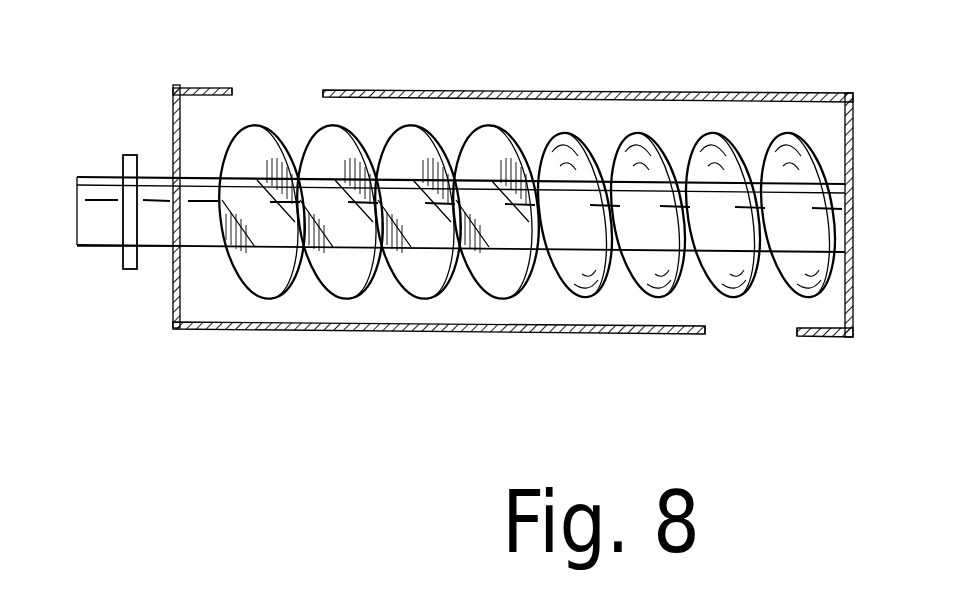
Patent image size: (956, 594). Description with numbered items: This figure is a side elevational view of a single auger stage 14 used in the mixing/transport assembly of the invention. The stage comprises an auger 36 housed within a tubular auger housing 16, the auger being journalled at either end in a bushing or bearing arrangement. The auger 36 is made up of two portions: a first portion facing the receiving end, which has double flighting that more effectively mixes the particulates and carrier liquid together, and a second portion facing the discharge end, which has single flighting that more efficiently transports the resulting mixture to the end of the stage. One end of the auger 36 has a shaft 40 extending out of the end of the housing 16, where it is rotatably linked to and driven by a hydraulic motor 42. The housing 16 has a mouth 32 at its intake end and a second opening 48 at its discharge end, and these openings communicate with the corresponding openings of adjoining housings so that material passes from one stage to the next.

The auger stage 14 is at (396, 350).
The tubular auger housing 16 is at (515, 90).
The mouth 32 is at (268, 95).
The auger 36 is at (233, 272).
The shaft 40 is at (148, 248).
The hydraulic motor 42 is at (103, 177).
The second opening 48 is at (752, 328).